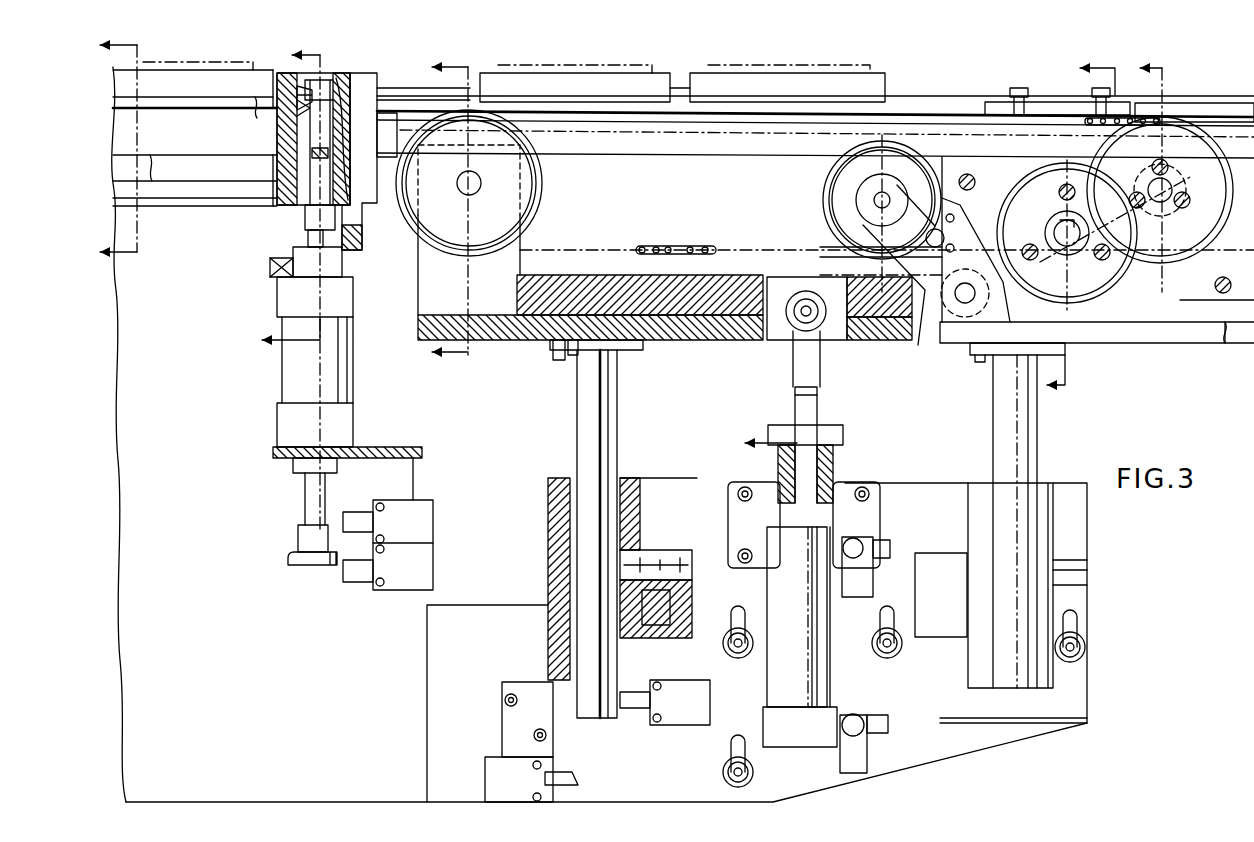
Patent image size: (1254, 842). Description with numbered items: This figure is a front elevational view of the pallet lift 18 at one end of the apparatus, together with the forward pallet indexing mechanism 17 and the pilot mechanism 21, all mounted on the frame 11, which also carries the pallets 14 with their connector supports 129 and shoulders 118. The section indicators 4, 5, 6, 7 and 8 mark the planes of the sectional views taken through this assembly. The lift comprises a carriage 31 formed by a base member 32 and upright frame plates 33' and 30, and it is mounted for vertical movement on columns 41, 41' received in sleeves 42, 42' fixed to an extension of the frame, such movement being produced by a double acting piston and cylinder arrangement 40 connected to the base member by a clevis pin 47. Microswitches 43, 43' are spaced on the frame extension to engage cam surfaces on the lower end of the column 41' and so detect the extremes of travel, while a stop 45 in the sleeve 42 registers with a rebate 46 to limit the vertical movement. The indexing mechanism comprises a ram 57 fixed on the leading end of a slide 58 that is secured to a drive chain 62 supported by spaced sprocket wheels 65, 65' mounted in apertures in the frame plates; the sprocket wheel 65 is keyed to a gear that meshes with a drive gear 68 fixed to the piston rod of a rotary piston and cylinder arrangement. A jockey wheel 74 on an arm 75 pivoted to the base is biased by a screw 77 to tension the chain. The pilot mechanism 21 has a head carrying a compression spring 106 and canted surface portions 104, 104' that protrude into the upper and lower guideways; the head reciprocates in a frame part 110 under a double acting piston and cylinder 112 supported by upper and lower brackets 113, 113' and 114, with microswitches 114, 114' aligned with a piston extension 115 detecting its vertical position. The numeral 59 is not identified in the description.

The section line 4- 4 is at (102, 151).
The section line 5- 5 is at (274, 281).
The section line 6- 6 is at (440, 208).
The section line 7- 7 is at (918, 256).
The section line 8- 8 is at (1104, 230).
The frame 11 is at (126, 722).
The pallet 14 is at (180, 106).
The forward pallet indexing mechanism 17 is at (1188, 87).
The pallet lift 18 is at (1088, 355).
The pilot mechanism 21 is at (262, 363).
The upright frame plate 30 is at (1226, 323).
The carriage 31 is at (500, 343).
The base member 32 is at (526, 344).
The upright frame plate 33' is at (442, 231).
The double acting piston and cylinder arrangement 40 is at (846, 681).
The column 41 is at (1046, 521).
The column 41' is at (581, 529).
The sleeve 42 is at (1055, 603).
The sleeve 42' is at (596, 579).
The microswitch 43 is at (686, 700).
The microswitch 43' is at (547, 742).
The stop 45 is at (638, 566).
The rebate 46 is at (625, 655).
The clevis pin 47 is at (786, 334).
The ram 57 is at (992, 104).
The slide 58 is at (1012, 99).
The bolt 59 is at (1052, 100).
The drive chain 62 is at (670, 246).
The sprocket wheel 65 is at (1168, 193).
The sprocket wheel 65' is at (500, 183).
The drive gear 68 is at (1098, 278).
The jockey wheel 74 is at (842, 212).
The arm 75 is at (938, 326).
The screw 77 is at (972, 243).
The surface portion 104 is at (258, 121).
The surface portion 104' is at (278, 241).
The compression spring 106 is at (350, 92).
The frame part 110 is at (318, 86).
The double acting piston and cylinder 112 is at (282, 392).
The upper bracket 113 is at (250, 268).
The lower flange 113' is at (303, 456).
The lower bracket 114 is at (393, 524).
The microswitch 114' is at (337, 567).
The piston extension 115 is at (300, 559).
The shoulder 118 is at (300, 94).
The connector support 129 is at (203, 139).